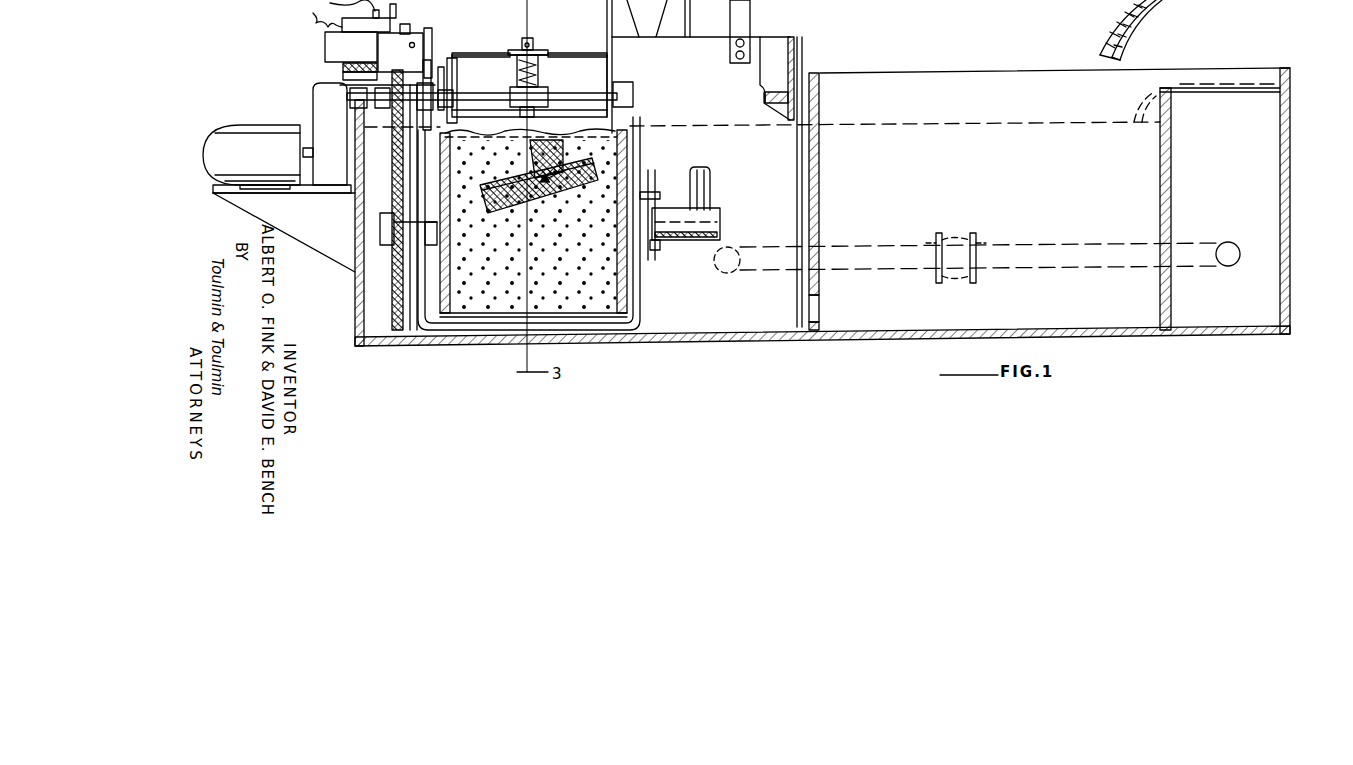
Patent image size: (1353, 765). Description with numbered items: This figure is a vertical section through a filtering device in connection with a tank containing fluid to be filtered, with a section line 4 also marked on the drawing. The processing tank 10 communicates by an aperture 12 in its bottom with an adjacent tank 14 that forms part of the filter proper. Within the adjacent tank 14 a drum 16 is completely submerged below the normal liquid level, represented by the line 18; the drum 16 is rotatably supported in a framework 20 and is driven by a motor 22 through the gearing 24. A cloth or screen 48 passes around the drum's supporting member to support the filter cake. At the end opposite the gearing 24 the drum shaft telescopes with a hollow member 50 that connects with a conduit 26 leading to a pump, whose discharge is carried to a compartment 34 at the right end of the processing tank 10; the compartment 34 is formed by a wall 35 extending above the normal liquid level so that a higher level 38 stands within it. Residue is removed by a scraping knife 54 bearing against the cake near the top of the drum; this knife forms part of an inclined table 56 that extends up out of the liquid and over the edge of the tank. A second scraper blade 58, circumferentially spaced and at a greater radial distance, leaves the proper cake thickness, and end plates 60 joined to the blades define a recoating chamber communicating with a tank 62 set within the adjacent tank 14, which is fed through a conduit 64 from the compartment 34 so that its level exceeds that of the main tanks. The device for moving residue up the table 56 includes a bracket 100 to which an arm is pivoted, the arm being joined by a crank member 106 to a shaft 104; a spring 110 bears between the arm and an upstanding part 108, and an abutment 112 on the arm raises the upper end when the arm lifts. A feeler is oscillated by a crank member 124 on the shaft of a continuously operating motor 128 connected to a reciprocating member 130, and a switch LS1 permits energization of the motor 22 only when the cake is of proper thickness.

The section line 4- 4 is at (840, 84).
The processing tank 10 is at (905, 73).
The aperture 12 is at (816, 333).
The adjacent tank 14 is at (731, 339).
The drum 16 is at (614, 334).
The liquid level line 18 is at (716, 126).
The framework 20 is at (418, 334).
The motor 22 is at (274, 186).
The gearing 24 is at (397, 116).
The conduit 26 is at (711, 187).
The compartment 34 is at (1291, 191).
The wall 35 is at (1160, 162).
The liquid level in compartment 38 is at (1207, 82).
The cloth or screen 48 is at (632, 198).
The hollow member 50 is at (662, 243).
The scraping knife 54 is at (538, 139).
The inclined table 56 is at (468, 78).
The second scraper blade 58 is at (1093, 7).
The end plates 60 is at (466, 145).
The tank 62 is at (699, 296).
The conduit 64 is at (1020, 247).
The bracket 100 is at (509, 88).
The shaft 104 is at (567, 93).
The crank member 106 is at (616, 80).
The upstanding part 108 is at (512, 114).
The spring 110 is at (538, 66).
The abutment 112 is at (528, 40).
The crank member 124 is at (400, 48).
The motor 128 is at (346, 72).
The reciprocating member 130 is at (432, 33).
The switch LS1 is at (325, 44).